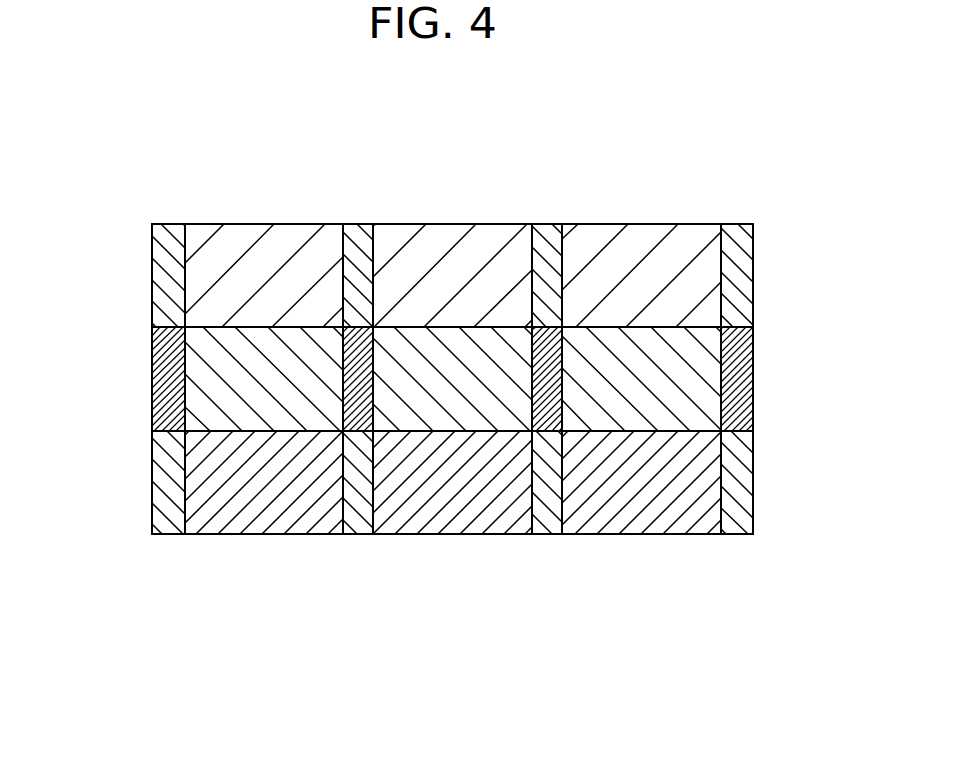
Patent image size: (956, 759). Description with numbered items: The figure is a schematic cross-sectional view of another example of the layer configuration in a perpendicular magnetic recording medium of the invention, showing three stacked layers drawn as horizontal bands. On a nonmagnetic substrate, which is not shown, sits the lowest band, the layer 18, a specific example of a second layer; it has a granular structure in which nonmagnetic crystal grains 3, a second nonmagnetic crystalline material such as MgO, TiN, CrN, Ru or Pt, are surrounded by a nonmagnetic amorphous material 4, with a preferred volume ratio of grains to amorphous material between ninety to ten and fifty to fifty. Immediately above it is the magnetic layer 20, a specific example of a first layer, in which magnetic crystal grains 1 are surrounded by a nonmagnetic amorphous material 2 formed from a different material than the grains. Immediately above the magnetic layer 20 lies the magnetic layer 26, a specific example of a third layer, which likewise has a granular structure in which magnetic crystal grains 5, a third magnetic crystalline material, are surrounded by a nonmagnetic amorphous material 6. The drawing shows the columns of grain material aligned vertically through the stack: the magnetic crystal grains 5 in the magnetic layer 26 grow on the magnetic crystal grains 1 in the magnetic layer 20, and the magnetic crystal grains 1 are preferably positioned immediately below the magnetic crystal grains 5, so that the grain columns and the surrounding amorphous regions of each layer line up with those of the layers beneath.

The magnetic crystal grains 1 is at (756, 340).
The nonmagnetic amorphous material 2 is at (760, 392).
The nonmagnetic crystal grains 3 is at (633, 522).
The nonmagnetic amorphous material 4 is at (758, 478).
The magnetic crystal grains 5 is at (637, 238).
The nonmagnetic amorphous material 6 is at (758, 278).
The magnetic layer 18 is at (133, 487).
The magnetic layer 20 is at (133, 390).
The magnetic layer 26 is at (133, 285).